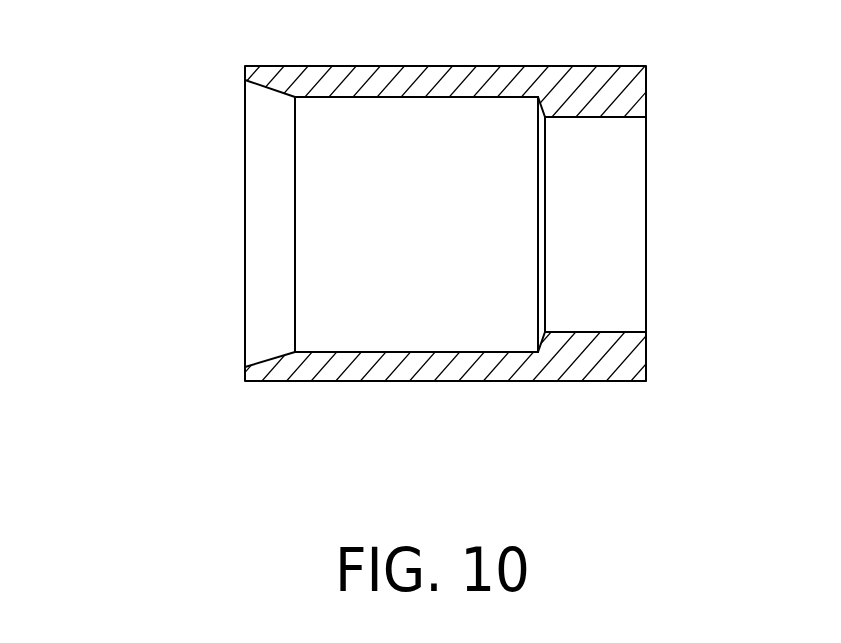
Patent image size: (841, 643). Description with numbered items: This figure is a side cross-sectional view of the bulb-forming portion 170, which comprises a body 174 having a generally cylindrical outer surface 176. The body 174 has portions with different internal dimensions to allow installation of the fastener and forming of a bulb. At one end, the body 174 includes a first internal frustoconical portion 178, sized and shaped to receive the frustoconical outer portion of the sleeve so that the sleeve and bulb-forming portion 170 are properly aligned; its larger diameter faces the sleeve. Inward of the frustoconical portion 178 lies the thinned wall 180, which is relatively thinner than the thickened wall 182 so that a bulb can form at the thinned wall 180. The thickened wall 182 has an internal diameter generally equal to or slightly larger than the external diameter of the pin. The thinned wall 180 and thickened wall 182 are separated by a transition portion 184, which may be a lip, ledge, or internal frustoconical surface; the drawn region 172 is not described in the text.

The bulb-forming portion 170 is at (112, 131).
The thick-walled section 172 is at (617, 165).
The body 174 is at (283, 358).
The generally cylindrical outer surface 176 is at (325, 382).
The first internal frustoconical portion 178 is at (255, 86).
The thinned wall 180 is at (387, 95).
The thickened wall 182 is at (640, 352).
The transition portion 184 is at (543, 343).